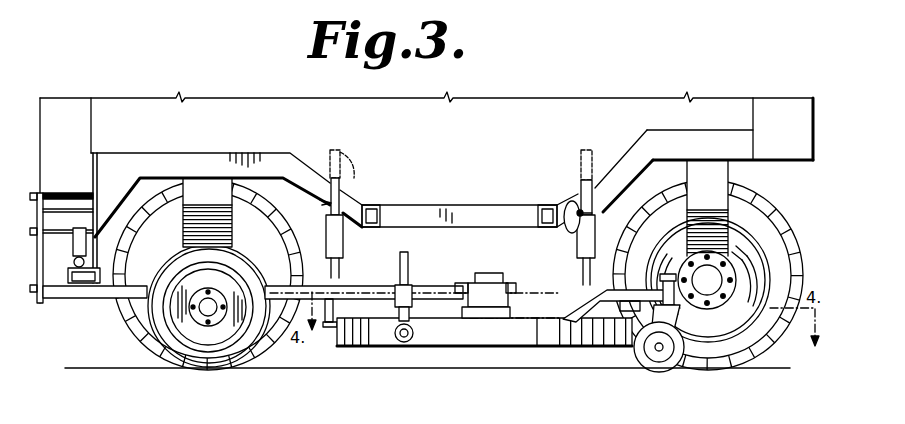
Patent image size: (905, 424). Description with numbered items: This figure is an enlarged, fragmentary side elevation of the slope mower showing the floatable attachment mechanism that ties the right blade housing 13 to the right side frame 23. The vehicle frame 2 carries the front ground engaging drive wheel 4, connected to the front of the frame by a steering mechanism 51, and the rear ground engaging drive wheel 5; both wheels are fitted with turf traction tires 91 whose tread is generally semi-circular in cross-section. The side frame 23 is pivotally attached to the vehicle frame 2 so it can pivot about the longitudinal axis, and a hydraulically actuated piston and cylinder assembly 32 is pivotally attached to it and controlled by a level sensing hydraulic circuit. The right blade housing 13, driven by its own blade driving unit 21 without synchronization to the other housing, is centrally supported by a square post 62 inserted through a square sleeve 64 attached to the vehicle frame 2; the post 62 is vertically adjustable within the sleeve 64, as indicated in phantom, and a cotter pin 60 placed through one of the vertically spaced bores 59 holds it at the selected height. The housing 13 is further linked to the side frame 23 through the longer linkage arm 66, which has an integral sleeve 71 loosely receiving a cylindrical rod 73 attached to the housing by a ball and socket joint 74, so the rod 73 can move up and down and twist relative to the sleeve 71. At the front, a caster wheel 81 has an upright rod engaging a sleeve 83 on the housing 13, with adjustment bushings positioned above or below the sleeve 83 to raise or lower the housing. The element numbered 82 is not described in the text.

The vehicle frame 2 is at (771, 103).
The front ground engaging drive wheel 4 is at (765, 210).
The rear ground engaging drive wheel 5 is at (262, 346).
The right blade housing 13 is at (506, 336).
The blade driving unit 21 is at (490, 275).
The side frame 23 is at (80, 290).
The hydraulically actuated piston and cylinder assembly 32 is at (72, 258).
The steering mechanism 51 is at (703, 168).
The vertically spaced bores 59 is at (322, 203).
The cotter pin 60 is at (594, 214).
The square post 62 is at (342, 192).
The square sleeve 64 is at (341, 238).
The longer linkage arm 66 is at (363, 283).
The sleeve 71 is at (410, 288).
The cylindrical rod 73 is at (406, 262).
The ball and socket joint 74 is at (407, 343).
The front caster wheel 81 is at (640, 352).
The wheel hub 82 is at (160, 338).
The sleeve 83 is at (687, 314).
The tire 91 is at (130, 325).